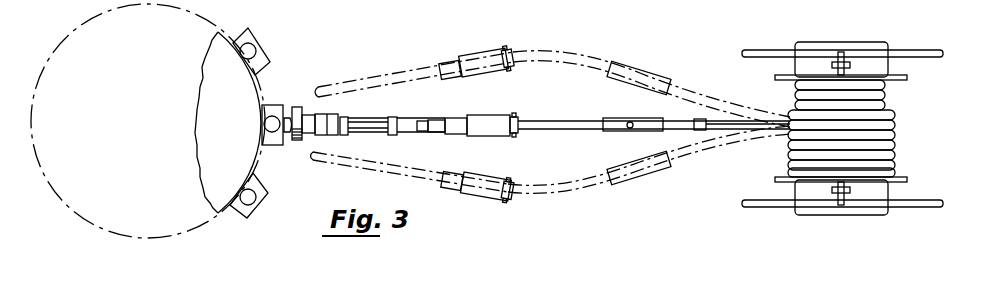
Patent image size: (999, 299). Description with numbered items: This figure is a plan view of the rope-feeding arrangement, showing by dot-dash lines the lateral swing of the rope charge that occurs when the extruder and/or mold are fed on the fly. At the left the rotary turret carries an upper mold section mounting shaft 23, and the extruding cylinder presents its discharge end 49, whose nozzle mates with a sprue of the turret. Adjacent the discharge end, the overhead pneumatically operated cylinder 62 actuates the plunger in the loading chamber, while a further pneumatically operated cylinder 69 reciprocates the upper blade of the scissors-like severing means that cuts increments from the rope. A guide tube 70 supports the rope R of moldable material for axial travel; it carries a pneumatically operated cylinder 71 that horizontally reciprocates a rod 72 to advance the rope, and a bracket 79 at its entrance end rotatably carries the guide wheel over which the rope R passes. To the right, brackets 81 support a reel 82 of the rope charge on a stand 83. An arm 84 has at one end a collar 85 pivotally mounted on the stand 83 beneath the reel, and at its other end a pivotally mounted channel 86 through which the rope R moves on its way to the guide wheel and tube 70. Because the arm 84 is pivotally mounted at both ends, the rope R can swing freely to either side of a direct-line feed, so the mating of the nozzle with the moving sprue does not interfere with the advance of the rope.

The upper mold section mounting shaft 23 is at (254, 42).
The discharge end of extruding cylinder 49 is at (282, 143).
The pneumatically operated cylinder 62 is at (300, 108).
The pneumatically operated cylinder 69 is at (332, 113).
The guide tube 70 is at (450, 117).
The pneumatically operated cylinder 71 is at (433, 132).
The rod 72 is at (370, 133).
The bracket 79 is at (495, 116).
The rope R is at (547, 132).
The bracket 81 is at (852, 65).
The reel 82 is at (887, 100).
The stand 83 is at (915, 50).
The arm 84 is at (707, 131).
The collar 85 is at (893, 132).
The channel 86 is at (623, 117).